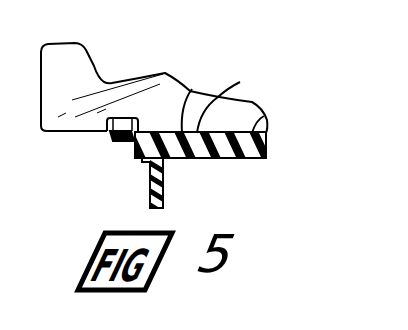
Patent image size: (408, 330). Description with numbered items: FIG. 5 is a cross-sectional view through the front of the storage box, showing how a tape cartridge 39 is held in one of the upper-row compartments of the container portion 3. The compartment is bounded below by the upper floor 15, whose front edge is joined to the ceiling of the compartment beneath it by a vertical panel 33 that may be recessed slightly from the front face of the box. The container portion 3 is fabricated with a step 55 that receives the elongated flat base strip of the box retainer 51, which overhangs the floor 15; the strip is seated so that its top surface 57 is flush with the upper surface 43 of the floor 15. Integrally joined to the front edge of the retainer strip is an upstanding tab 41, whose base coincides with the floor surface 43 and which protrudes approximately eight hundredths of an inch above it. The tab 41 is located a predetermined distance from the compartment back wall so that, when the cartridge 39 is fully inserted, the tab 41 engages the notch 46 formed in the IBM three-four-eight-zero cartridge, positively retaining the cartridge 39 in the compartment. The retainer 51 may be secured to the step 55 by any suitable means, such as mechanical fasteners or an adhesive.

The tape cartridge 39 is at (74, 85).
The upstanding tab 41 is at (119, 106).
The top surface 57 is at (186, 90).
The step 55 is at (240, 82).
The upper surface 43 is at (266, 114).
The upper floor 15 is at (264, 151).
The vertical panel 33 is at (150, 188).
The notch 46 is at (110, 142).
The box retainer 51 is at (130, 148).
The container portion 3 is at (218, 172).